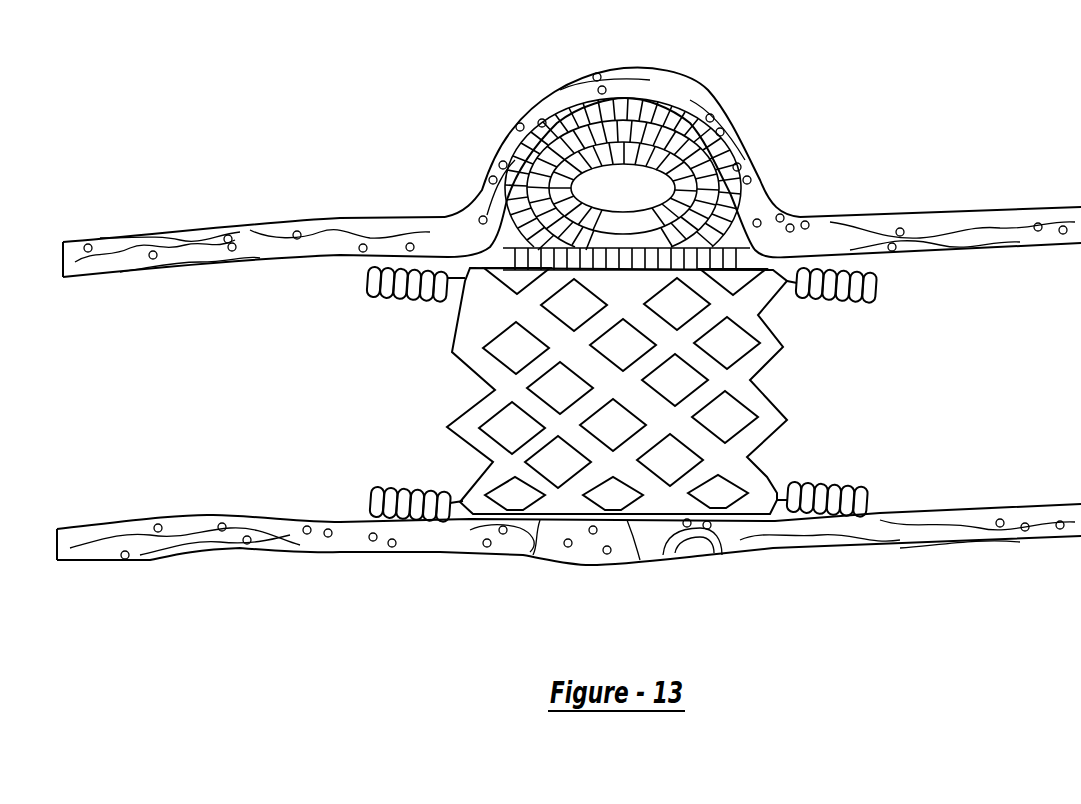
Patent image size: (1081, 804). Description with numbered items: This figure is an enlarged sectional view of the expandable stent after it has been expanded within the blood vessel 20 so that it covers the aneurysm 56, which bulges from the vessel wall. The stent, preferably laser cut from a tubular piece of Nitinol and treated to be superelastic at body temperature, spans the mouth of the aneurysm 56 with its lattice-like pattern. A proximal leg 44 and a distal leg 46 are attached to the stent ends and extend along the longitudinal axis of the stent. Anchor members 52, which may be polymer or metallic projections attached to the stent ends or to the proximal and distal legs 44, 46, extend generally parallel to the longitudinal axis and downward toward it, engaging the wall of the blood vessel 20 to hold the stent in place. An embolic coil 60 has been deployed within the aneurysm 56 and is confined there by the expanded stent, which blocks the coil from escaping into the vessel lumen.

The blood vessel 20 is at (150, 232).
The proximal leg 44 is at (457, 503).
The distal leg 46 is at (782, 502).
The anchor members 52 is at (398, 268).
The aneurysm 56 is at (557, 102).
The embolic coil 60 is at (736, 150).